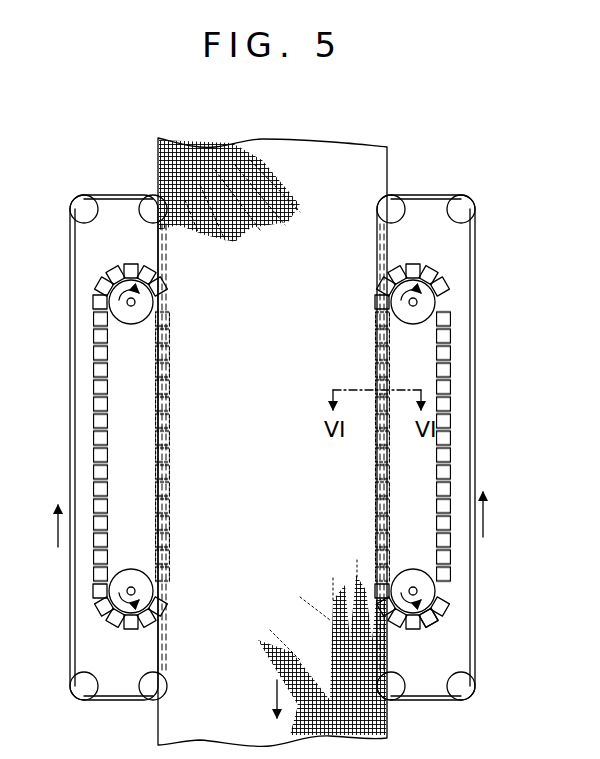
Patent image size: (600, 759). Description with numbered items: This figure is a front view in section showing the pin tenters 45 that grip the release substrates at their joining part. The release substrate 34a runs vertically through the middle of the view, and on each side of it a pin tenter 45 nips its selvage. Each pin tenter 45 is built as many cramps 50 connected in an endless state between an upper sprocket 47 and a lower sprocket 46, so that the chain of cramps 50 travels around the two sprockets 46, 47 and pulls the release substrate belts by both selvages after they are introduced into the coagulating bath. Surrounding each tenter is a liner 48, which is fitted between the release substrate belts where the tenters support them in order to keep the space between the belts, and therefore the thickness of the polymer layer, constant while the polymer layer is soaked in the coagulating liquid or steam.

The release substrate 34a is at (348, 143).
The pin tenter 45 is at (92, 412).
The sprocket 46 is at (418, 573).
The sprocket 47 is at (410, 325).
The liner 48 is at (119, 195).
The cramp 50 is at (426, 622).